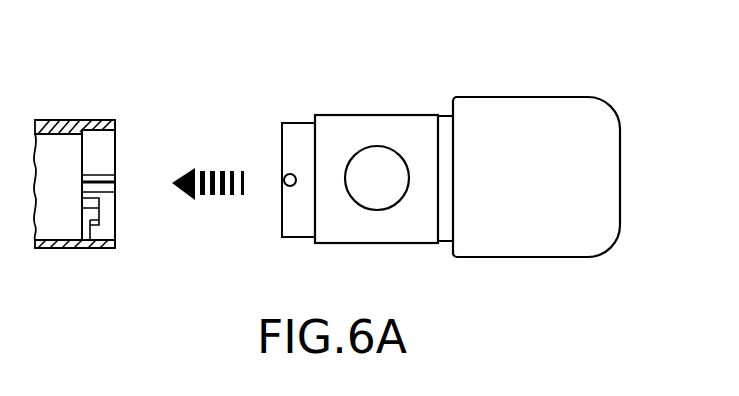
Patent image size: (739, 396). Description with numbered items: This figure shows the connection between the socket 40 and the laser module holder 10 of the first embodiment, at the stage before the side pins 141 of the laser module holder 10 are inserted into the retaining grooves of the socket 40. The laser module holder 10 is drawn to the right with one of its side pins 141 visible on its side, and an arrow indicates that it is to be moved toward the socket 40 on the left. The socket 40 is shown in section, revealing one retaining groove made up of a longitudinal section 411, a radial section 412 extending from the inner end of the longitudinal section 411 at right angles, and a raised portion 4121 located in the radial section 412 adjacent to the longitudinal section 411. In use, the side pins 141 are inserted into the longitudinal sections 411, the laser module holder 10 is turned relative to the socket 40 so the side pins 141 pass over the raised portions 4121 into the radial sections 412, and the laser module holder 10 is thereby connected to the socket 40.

The laser module holder 10 is at (515, 78).
The side pin 141 is at (285, 176).
The socket 40 is at (82, 106).
The longitudinal section 411 is at (110, 183).
The raised portion 4121 is at (99, 203).
The radial section 412 is at (92, 248).